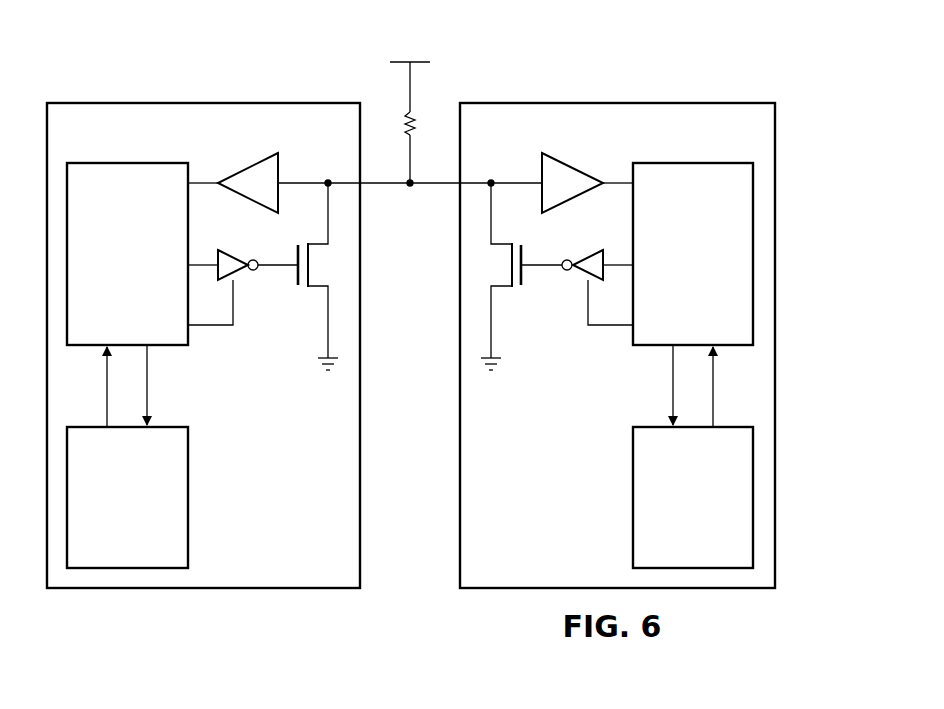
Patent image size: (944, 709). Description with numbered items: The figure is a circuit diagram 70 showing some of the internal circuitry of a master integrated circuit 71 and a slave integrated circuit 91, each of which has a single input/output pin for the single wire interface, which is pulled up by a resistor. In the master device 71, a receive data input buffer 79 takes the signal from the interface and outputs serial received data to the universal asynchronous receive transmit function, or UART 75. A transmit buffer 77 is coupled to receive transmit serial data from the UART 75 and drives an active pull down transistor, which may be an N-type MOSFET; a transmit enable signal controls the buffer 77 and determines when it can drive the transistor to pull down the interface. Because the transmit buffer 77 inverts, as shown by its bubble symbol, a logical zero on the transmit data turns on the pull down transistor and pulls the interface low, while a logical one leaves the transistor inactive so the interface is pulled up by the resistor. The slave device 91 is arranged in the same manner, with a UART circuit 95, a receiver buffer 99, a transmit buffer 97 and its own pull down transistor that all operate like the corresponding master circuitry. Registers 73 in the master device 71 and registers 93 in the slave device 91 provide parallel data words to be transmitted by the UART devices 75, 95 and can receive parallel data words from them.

The circuit diagram 70 is at (614, 60).
The master integrated circuit 71 is at (255, 536).
The registers 73 is at (114, 527).
The UART 75 is at (125, 163).
The transmit buffer 77 is at (240, 258).
The receive data input buffer 79 is at (248, 163).
The slave integrated circuit 91 is at (537, 536).
The registers 93 is at (680, 527).
The UART circuit 95 is at (692, 163).
The transmit buffer 97 is at (578, 258).
The receiver buffer 99 is at (573, 163).